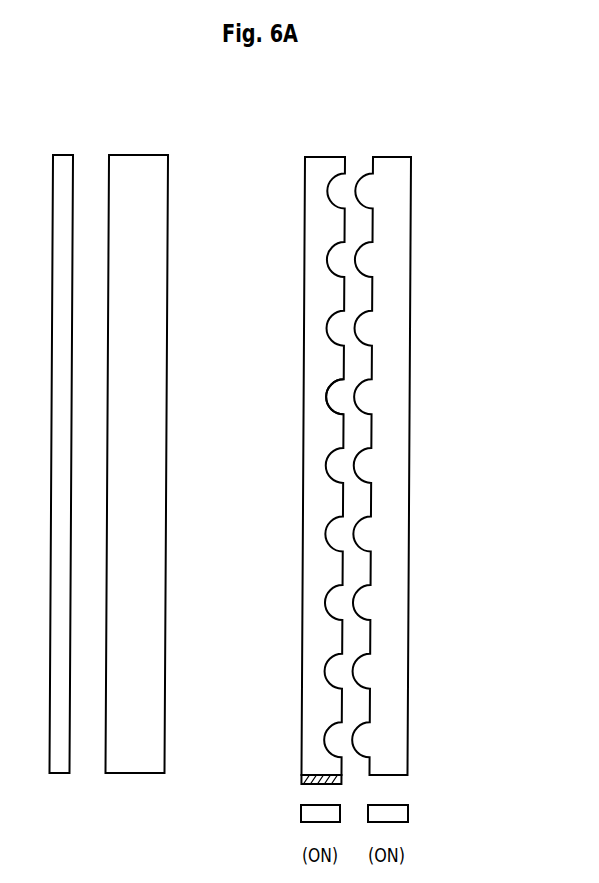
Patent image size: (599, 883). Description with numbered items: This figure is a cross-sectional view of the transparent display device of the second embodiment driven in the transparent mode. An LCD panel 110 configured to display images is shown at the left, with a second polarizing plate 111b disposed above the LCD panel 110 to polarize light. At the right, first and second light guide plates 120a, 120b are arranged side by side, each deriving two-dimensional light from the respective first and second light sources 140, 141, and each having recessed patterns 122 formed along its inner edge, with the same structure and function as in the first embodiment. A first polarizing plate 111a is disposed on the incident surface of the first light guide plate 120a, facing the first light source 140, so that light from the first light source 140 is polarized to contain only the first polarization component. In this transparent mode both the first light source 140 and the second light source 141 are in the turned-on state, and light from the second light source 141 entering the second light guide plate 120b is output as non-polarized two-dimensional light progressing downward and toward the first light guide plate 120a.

The LCD panel 110 is at (137, 155).
The first polarizing plate 111a is at (302, 779).
The second polarizing plate 111b is at (63, 155).
The first light guide plate 120a is at (325, 157).
The second light guide plate 120b is at (394, 157).
The recessed patterns 122 is at (325, 397).
The first light source 140 is at (300, 812).
The second light source 141 is at (408, 814).